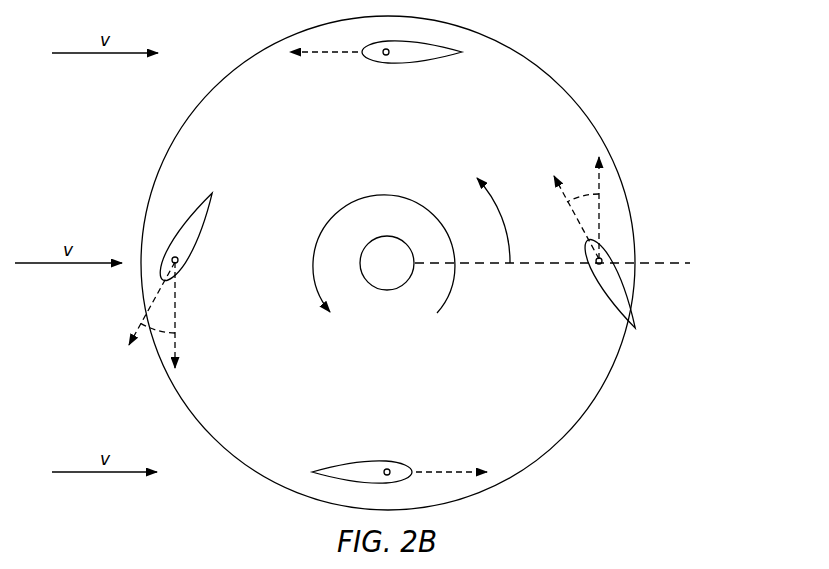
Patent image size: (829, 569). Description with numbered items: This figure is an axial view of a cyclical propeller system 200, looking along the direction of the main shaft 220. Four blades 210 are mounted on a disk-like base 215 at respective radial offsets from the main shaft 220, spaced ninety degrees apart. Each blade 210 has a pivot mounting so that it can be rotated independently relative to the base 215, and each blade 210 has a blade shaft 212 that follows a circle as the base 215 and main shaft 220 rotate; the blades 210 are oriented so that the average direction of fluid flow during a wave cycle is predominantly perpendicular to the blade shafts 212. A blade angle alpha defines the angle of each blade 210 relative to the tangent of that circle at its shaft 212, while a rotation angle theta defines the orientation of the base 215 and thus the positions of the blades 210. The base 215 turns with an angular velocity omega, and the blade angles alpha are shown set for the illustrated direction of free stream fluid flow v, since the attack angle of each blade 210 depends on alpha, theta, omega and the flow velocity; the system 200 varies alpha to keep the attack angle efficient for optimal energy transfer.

The cyclical propeller system 200 is at (583, 69).
The blade 210 is at (405, 56).
The blade shaft 212 is at (385, 57).
The base 215 is at (487, 241).
The main shaft 220 is at (387, 263).